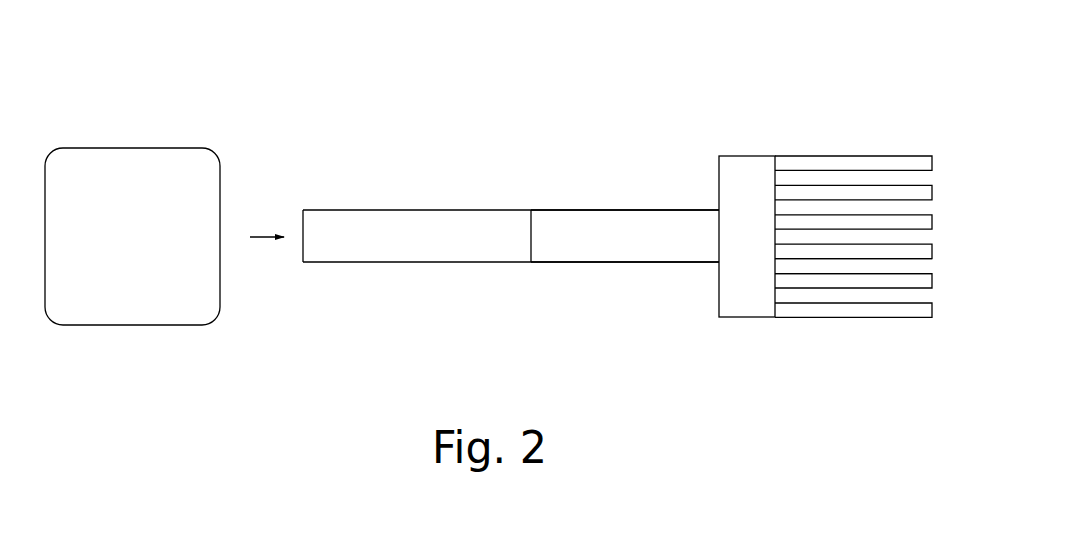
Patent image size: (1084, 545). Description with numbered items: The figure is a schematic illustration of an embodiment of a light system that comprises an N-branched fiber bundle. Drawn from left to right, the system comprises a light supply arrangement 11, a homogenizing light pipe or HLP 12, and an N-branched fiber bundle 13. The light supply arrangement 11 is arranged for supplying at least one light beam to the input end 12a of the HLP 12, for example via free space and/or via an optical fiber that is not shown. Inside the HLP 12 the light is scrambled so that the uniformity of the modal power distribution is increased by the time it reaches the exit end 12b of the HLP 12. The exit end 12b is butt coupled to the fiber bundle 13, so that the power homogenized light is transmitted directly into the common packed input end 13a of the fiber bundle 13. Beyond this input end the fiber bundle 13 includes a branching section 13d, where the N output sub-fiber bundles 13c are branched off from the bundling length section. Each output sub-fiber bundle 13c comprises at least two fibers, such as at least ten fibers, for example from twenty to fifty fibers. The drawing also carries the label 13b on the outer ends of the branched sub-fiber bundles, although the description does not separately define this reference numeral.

The light supply arrangement 11 is at (120, 104).
The HLP 12 is at (415, 109).
The input end of the HLP 12a is at (302, 205).
The exit end of the HLP 12b is at (529, 203).
The N-branched fiber bundle 13 is at (789, 220).
The common packed input end of the fiber bundle 13a is at (540, 263).
The fingers / teeth 13b is at (936, 184).
The output sub-fiber bundle 13c is at (866, 264).
The branching section 13d is at (748, 151).